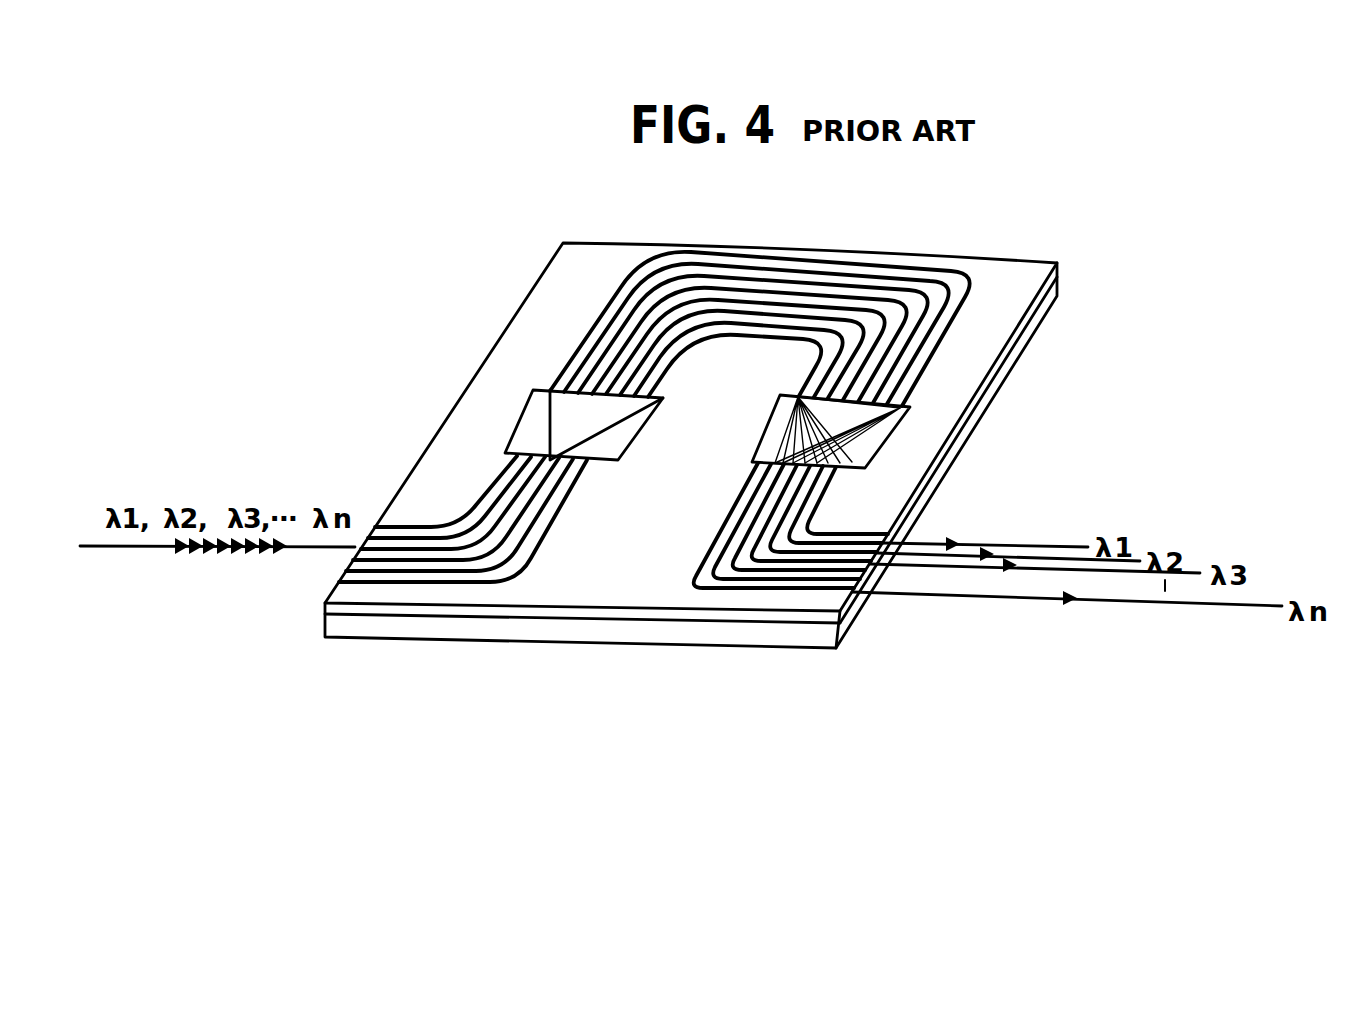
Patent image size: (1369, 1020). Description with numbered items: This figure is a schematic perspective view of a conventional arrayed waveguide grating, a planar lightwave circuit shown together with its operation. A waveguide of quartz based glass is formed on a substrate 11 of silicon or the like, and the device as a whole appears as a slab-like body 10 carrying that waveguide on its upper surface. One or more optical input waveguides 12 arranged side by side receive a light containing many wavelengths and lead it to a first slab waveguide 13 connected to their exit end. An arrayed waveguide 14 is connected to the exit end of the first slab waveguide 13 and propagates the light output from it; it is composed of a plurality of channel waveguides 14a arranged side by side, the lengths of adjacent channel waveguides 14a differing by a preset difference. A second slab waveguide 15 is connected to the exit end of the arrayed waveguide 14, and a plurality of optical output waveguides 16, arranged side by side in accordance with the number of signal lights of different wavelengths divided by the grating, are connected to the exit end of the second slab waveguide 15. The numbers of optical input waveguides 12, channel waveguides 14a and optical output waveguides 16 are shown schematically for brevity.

The optical waveguide substrate 10 is at (1060, 279).
The substrate 11 is at (1050, 297).
The optical input waveguide 12 is at (408, 528).
The first slab waveguide 13 is at (530, 409).
The arrayed waveguide 14 is at (783, 311).
The channel waveguide 14a is at (590, 317).
The second slab waveguide 15 is at (910, 412).
The optical output waveguide 16 is at (817, 533).